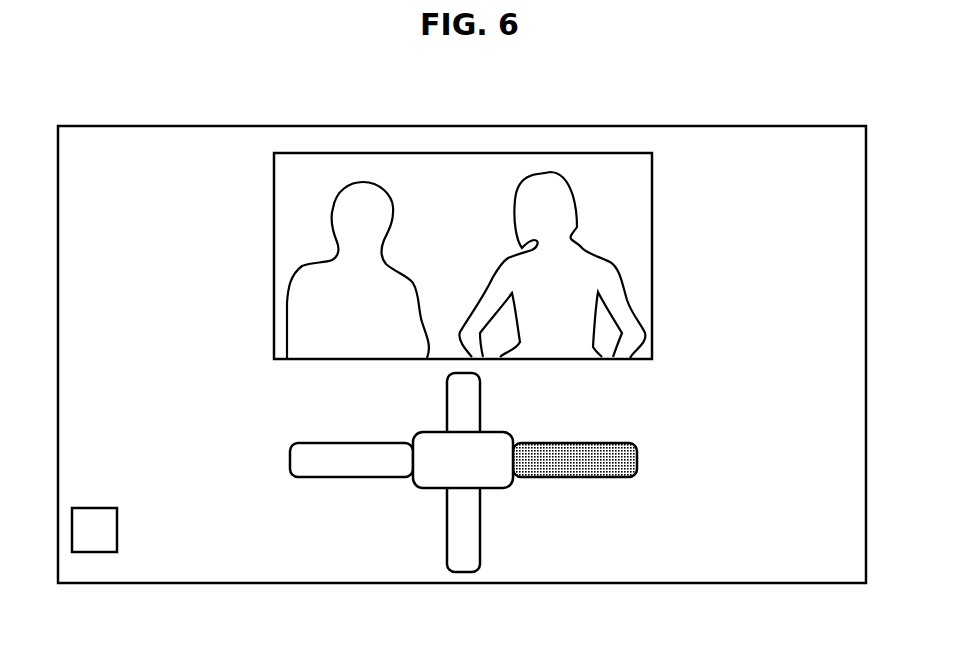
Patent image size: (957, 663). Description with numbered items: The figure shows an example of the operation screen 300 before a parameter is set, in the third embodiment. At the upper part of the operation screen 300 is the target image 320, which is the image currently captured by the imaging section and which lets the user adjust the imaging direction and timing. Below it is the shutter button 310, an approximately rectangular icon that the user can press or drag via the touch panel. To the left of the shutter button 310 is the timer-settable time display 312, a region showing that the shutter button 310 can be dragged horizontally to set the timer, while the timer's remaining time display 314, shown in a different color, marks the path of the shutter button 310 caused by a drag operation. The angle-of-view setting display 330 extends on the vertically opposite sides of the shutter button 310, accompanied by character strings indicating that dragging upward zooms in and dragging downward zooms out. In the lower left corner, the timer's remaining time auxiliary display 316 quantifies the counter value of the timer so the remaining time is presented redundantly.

The operation screen 300 is at (733, 127).
The target image 320 is at (462, 153).
The shutter button 310 is at (433, 488).
The timer-settable time display 312 is at (330, 478).
The timer's remaining time display 314 is at (570, 478).
The angle-of-view setting display 330 is at (460, 572).
The timer's remaining time auxiliary display 316 is at (93, 552).